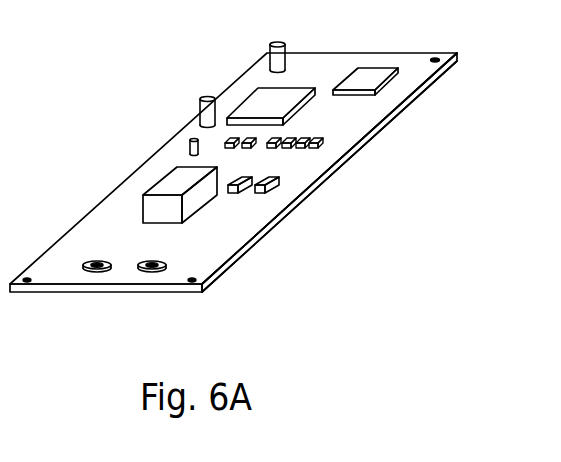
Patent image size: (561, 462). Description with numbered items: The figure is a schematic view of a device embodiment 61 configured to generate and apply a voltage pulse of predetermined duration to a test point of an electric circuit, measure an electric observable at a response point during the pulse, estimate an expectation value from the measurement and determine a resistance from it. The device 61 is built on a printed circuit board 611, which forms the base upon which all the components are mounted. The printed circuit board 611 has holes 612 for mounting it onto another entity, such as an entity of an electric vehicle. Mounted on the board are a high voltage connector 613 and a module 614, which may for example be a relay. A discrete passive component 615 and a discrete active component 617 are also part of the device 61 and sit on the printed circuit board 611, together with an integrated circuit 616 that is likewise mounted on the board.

The device embodiment 61 is at (402, 144).
The printed circuit board 611 is at (261, 239).
The holes 612 is at (205, 283).
The high voltage connector 613 is at (100, 273).
The module 614 is at (157, 180).
The discrete passive component 615 is at (197, 109).
The integrated circuit 616 is at (249, 92).
The discrete active component 617 is at (278, 187).